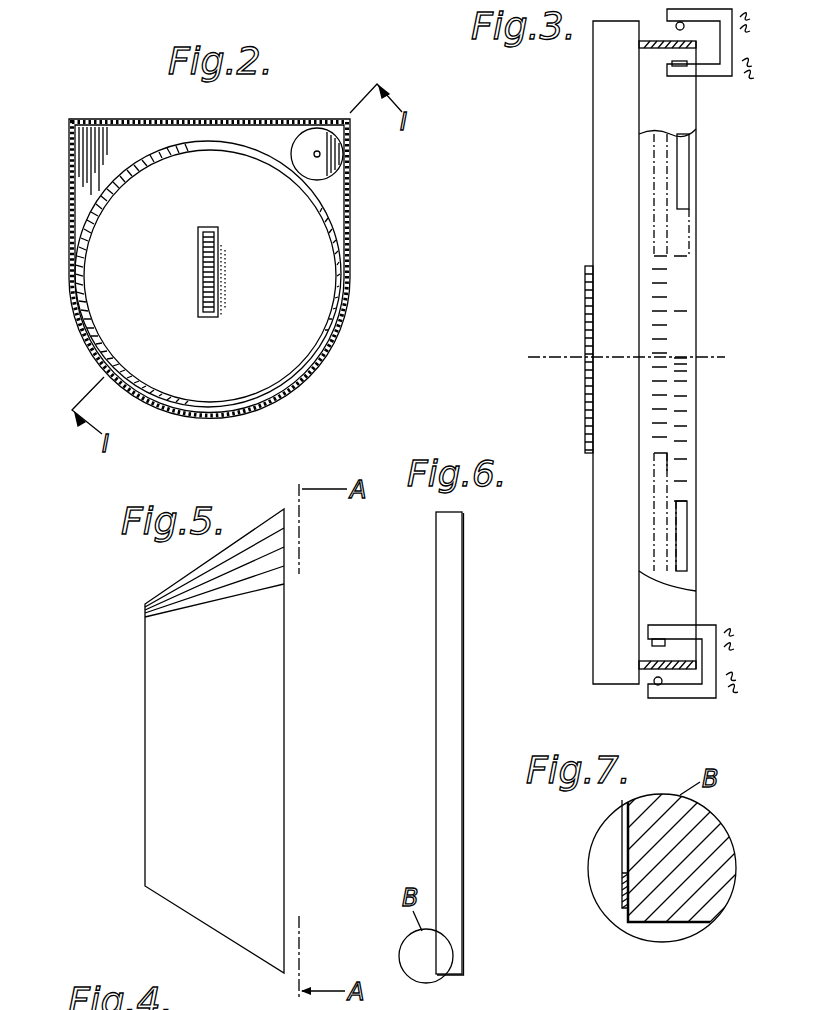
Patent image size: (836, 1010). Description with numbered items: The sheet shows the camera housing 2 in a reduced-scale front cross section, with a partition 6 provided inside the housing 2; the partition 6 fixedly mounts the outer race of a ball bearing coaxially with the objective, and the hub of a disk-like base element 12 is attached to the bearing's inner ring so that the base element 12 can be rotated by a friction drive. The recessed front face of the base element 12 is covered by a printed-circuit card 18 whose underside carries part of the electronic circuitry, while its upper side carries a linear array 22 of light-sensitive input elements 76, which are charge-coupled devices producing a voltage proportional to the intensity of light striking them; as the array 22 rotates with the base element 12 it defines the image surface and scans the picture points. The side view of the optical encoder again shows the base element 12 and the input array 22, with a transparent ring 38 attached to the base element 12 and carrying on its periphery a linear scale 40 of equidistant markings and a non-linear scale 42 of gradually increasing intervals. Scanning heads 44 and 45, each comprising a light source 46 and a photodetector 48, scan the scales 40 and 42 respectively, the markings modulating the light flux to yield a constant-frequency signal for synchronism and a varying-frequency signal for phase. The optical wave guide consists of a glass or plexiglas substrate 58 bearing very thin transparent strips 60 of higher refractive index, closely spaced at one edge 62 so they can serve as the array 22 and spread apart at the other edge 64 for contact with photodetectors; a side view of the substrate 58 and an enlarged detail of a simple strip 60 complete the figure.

In FIG. 2, the housing 2 is at (121, 111).
In FIG. 2, the partition 6 is at (110, 159).
In FIG. 2, the disk-like base element 12 is at (100, 185).
In FIG. 3, the disk-like base element 12 is at (595, 60).
In FIG. 2, the printed-circuit card 18 is at (144, 238).
In FIG. 2, the array of light-sensitive input elements 22 is at (215, 245).
In FIG. 3, the array of light-sensitive input elements 22 is at (578, 309).
In FIG. 2, the light-sensitive input elements 76 is at (202, 293).
In FIG. 3, the light-sensitive input elements 76 is at (586, 412).
In FIG. 3, the ring 38 is at (639, 664).
In FIG. 3, the linear scale 40 is at (660, 183).
In FIG. 3, the non-linear scale 42 is at (686, 165).
In FIG. 3, the scanning head 44 is at (703, 628).
In FIG. 3, the scanning head 45 is at (711, 12).
In FIG. 3, the light source 46 is at (676, 26).
In FIG. 3, the photodetector 48 is at (680, 66).
In FIG. 5, the substrate 58 is at (157, 828).
In FIG. 6, the substrate 58 is at (430, 729).
In FIG. 7, the substrate 58 is at (706, 836).
In FIG. 5, the strips 60 is at (220, 598).
In FIG. 7, the strips 60 is at (622, 893).
In FIG. 5, the edge of substrate 62 is at (145, 705).
In FIG. 5, the edge of substrate 64 is at (285, 689).